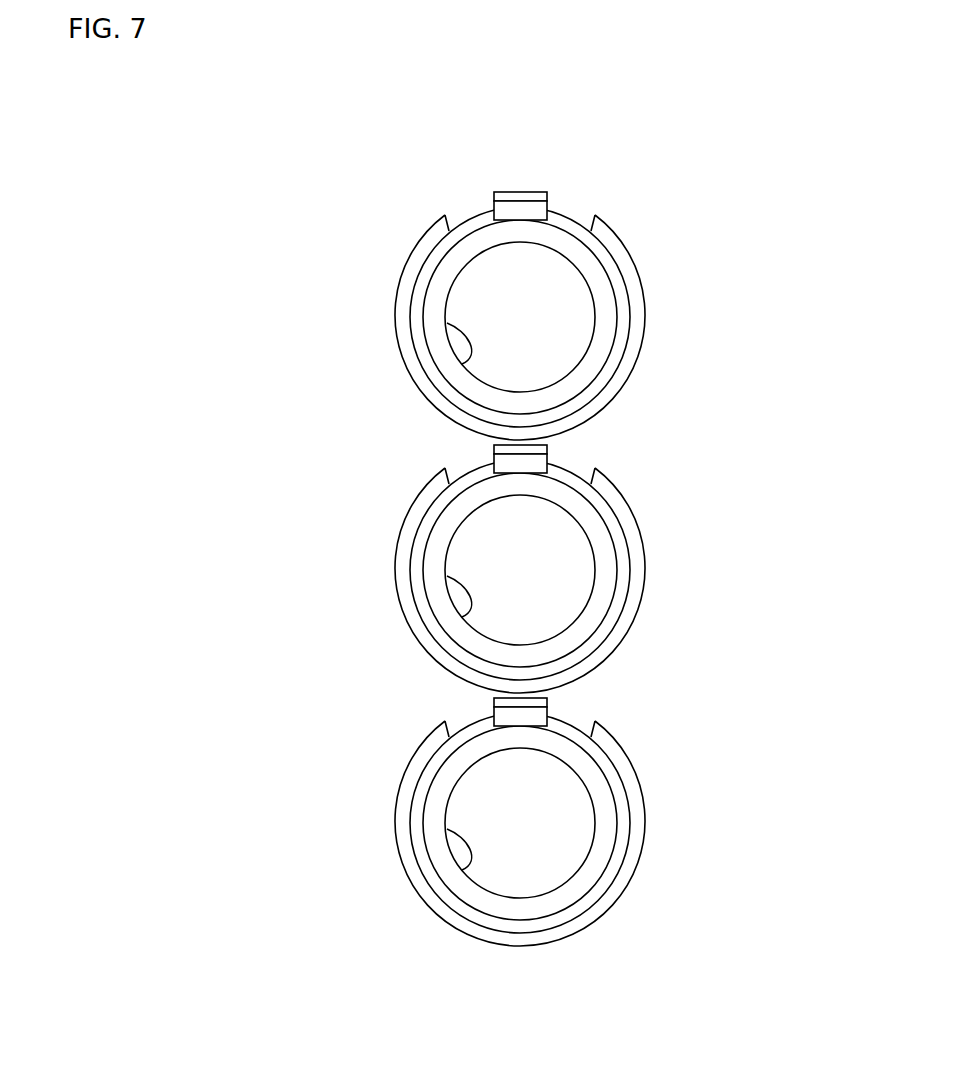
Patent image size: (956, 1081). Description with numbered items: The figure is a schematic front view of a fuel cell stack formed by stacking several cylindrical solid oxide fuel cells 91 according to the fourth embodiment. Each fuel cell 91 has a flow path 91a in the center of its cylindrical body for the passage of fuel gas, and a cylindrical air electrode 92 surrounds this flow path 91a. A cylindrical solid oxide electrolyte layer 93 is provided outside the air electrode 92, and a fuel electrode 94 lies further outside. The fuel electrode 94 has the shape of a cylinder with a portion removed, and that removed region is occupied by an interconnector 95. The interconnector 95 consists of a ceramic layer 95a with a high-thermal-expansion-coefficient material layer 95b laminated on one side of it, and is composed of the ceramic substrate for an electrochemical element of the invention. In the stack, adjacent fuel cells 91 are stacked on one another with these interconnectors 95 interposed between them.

The fuel cell 91 is at (544, 530).
The flow path 91a is at (562, 332).
The air electrode 92 is at (458, 362).
The solid oxide electrolyte layer 93 is at (414, 323).
The fuel electrode 94 is at (403, 290).
The interconnector 95 is at (656, 422).
The ceramic layer 95a is at (548, 203).
The high-thermal-expansion-coefficient material layer 95b is at (549, 196).